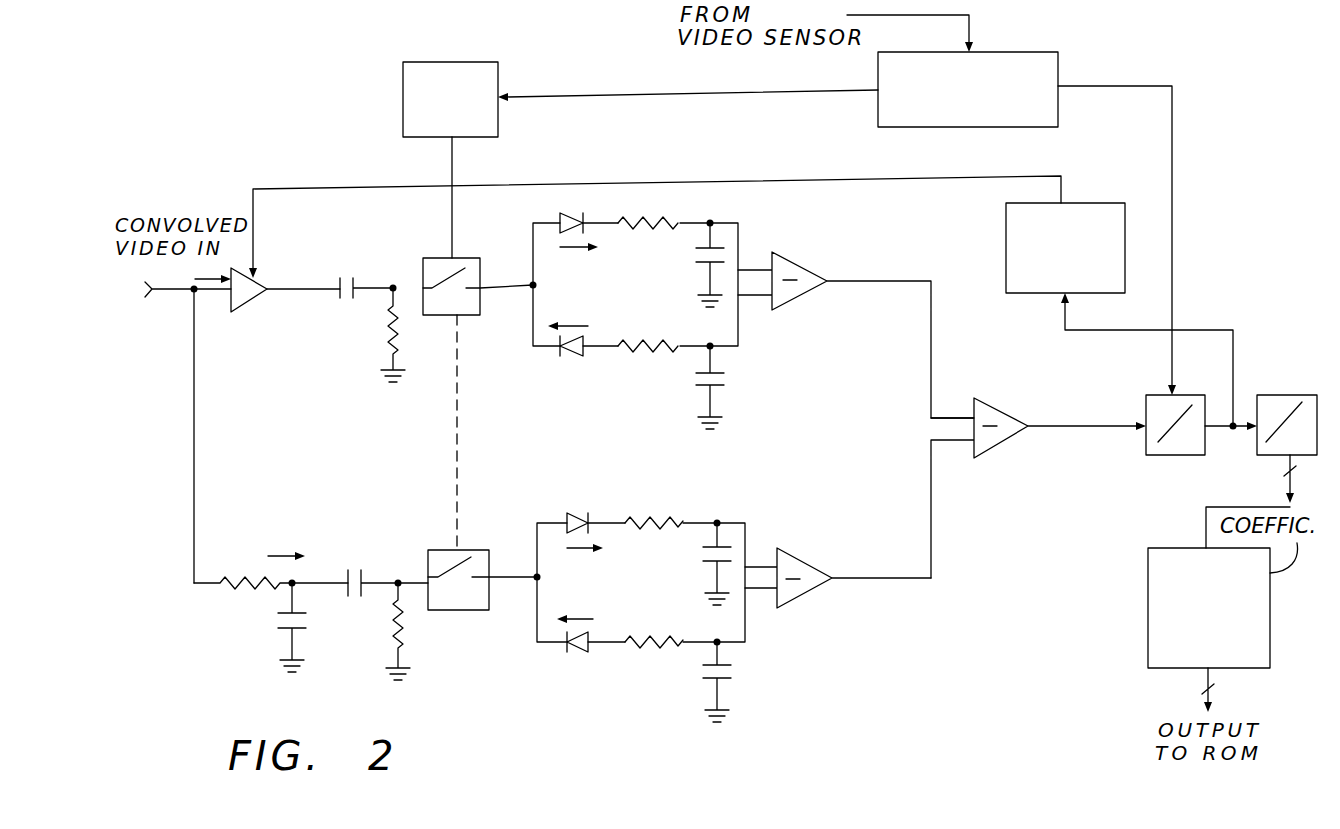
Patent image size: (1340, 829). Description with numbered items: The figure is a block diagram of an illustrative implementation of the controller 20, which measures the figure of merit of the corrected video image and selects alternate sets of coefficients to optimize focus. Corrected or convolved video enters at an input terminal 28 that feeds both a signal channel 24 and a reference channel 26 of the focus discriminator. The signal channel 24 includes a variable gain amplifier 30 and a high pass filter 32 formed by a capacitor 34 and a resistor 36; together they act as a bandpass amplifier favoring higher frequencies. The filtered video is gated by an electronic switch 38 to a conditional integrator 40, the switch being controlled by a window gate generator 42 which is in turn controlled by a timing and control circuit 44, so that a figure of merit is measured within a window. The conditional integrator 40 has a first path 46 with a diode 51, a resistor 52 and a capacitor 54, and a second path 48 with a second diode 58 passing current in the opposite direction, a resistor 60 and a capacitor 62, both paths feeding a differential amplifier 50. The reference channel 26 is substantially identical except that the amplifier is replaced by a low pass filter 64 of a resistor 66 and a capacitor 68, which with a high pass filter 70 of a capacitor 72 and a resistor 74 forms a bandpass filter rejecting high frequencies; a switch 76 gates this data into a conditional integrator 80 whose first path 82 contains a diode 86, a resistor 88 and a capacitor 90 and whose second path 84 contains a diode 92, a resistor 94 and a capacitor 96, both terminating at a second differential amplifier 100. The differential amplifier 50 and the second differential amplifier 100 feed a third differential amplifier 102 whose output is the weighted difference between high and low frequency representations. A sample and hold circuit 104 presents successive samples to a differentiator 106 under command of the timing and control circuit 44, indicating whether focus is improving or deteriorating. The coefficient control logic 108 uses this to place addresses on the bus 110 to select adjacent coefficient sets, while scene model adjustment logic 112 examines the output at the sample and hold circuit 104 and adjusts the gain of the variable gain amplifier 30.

The controller 20 is at (246, 185).
The signal channel 24 is at (194, 275).
The reference channel 26 is at (264, 555).
The input terminal 28 is at (179, 432).
The variable gain amplifier 30 is at (262, 302).
The high pass filter 32 is at (370, 319).
The capacitor 34 is at (347, 302).
The resistor 36 is at (400, 342).
The electronic switch 38 is at (470, 240).
The conditional integrator 40 is at (604, 309).
The window gate generator 42 is at (487, 62).
The timing and control circuit 44 is at (1045, 52).
The first path 46 is at (574, 262).
The second path 48 is at (568, 313).
The differential amplifier 50 is at (798, 262).
The diode 51 is at (570, 216).
The resistor 52 is at (662, 216).
The capacitor 54 is at (700, 262).
The second diode 58 is at (572, 357).
The resistor 60 is at (673, 316).
The capacitor 62 is at (700, 377).
The low pass filter 64 is at (183, 656).
The resistor 66 is at (245, 592).
The capacitor 68 is at (285, 627).
The high pass filter 70 is at (406, 599).
The capacitor 72 is at (362, 597).
The resistor 74 is at (405, 628).
The switch 76 is at (490, 566).
The conditional integrator 80 is at (657, 605).
The first path 82 is at (579, 564).
The second path 84 is at (575, 606).
The diode 86 is at (578, 517).
The resistor 88 is at (665, 520).
The capacitor 90 is at (713, 550).
The diode 92 is at (585, 655).
The resistor 94 is at (645, 638).
The capacitor 96 is at (728, 676).
The second differential amplifier 100 is at (808, 565).
The third differential amplifier 102 is at (990, 458).
The sample and hold circuit 104 is at (1195, 455).
The differentiator 106 is at (1280, 395).
The coefficient control logic 108 is at (1175, 548).
The bus 110 is at (1172, 670).
The scene model adjustment logic 112 is at (1072, 203).